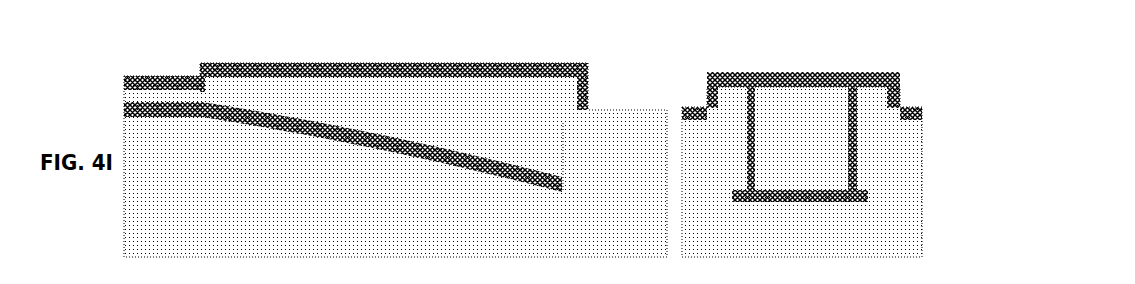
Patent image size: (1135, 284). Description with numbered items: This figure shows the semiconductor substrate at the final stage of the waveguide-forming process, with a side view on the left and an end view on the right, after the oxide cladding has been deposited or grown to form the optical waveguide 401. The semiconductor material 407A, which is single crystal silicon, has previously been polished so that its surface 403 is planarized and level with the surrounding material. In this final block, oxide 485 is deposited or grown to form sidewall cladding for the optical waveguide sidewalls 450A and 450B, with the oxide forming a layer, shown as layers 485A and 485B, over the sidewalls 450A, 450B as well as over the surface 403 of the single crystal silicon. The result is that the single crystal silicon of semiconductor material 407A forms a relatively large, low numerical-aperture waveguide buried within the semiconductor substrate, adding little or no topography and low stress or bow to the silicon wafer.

The optical waveguide 401 is at (123, 40).
The surface 403 is at (228, 75).
The oxide 485 is at (455, 73).
The semiconductor material 407A is at (326, 112).
The optical waveguide sidewall 450A is at (748, 122).
The optical waveguide sidewall 450B is at (856, 122).
The layer 485A is at (755, 127).
The layer 485B is at (851, 127).